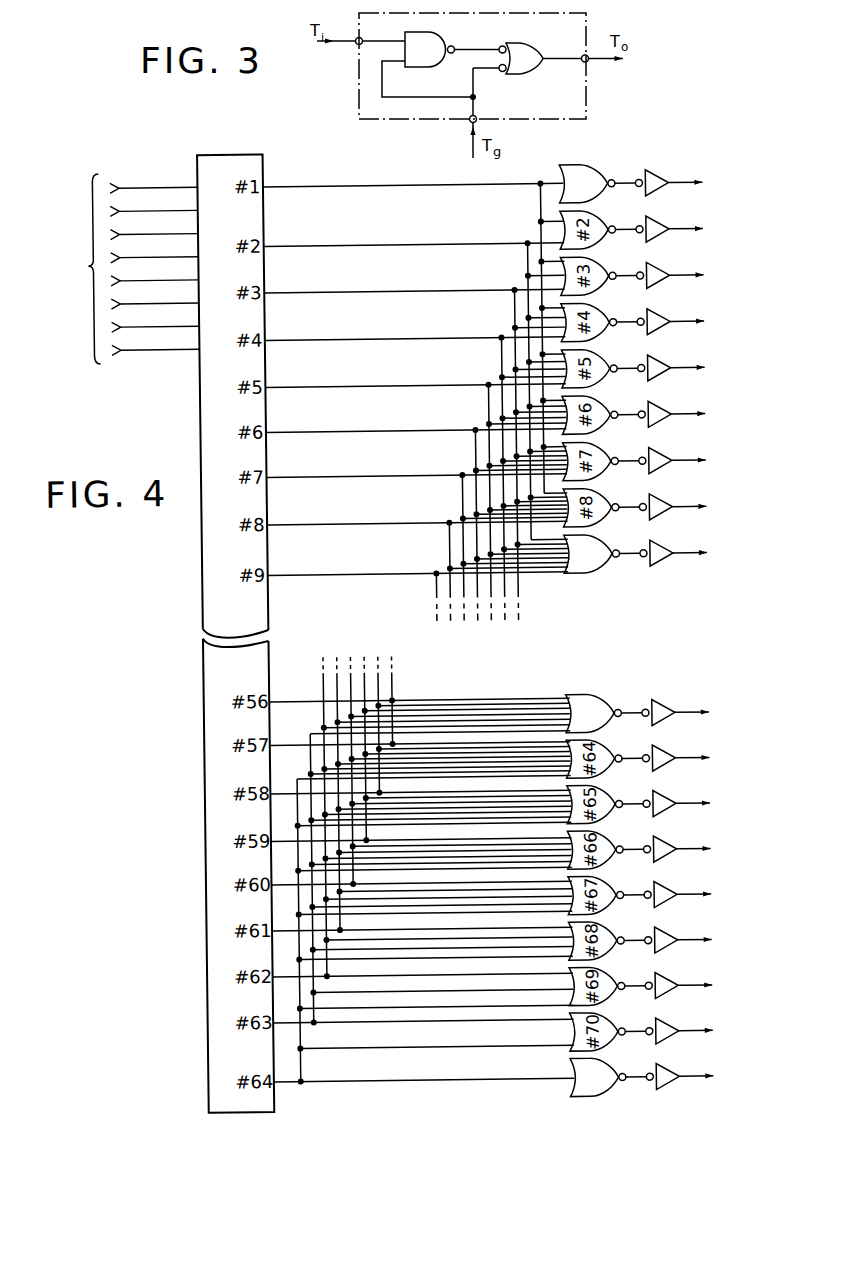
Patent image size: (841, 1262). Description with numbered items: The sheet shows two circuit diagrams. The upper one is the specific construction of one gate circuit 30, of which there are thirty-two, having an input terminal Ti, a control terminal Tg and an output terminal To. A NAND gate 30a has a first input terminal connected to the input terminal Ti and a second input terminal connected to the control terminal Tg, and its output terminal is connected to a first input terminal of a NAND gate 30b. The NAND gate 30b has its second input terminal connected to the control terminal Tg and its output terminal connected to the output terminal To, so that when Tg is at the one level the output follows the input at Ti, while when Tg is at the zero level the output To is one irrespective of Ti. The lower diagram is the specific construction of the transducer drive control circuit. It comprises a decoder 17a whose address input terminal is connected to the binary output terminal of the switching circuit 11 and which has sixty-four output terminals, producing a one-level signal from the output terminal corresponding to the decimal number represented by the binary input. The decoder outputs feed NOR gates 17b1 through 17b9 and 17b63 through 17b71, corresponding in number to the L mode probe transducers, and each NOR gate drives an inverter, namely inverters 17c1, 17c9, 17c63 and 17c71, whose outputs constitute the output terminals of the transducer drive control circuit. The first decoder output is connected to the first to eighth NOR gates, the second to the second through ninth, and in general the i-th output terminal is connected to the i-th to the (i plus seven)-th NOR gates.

In FIG. 3, the gate circuit 30 is at (588, 24).
In FIG. 3, the NAND gate 30a is at (446, 40).
In FIG. 3, the NAND gate 30b is at (524, 62).
In FIG. 4, the switching circuit 11 is at (121, 269).
In FIG. 4, the decoder 17a is at (203, 742).
In FIG. 4, the NOR gate 17b1 is at (608, 160).
In FIG. 4, the inverter 17c1 is at (668, 173).
In FIG. 4, the NOR gate 17b9 is at (597, 576).
In FIG. 4, the inverter 17c9 is at (660, 569).
In FIG. 4, the NOR gate 17b63 is at (602, 697).
In FIG. 4, the inverter 17c63 is at (670, 703).
In FIG. 4, the NOR gate 17b71 is at (567, 1086).
In FIG. 4, the inverter 17c71 is at (661, 1087).